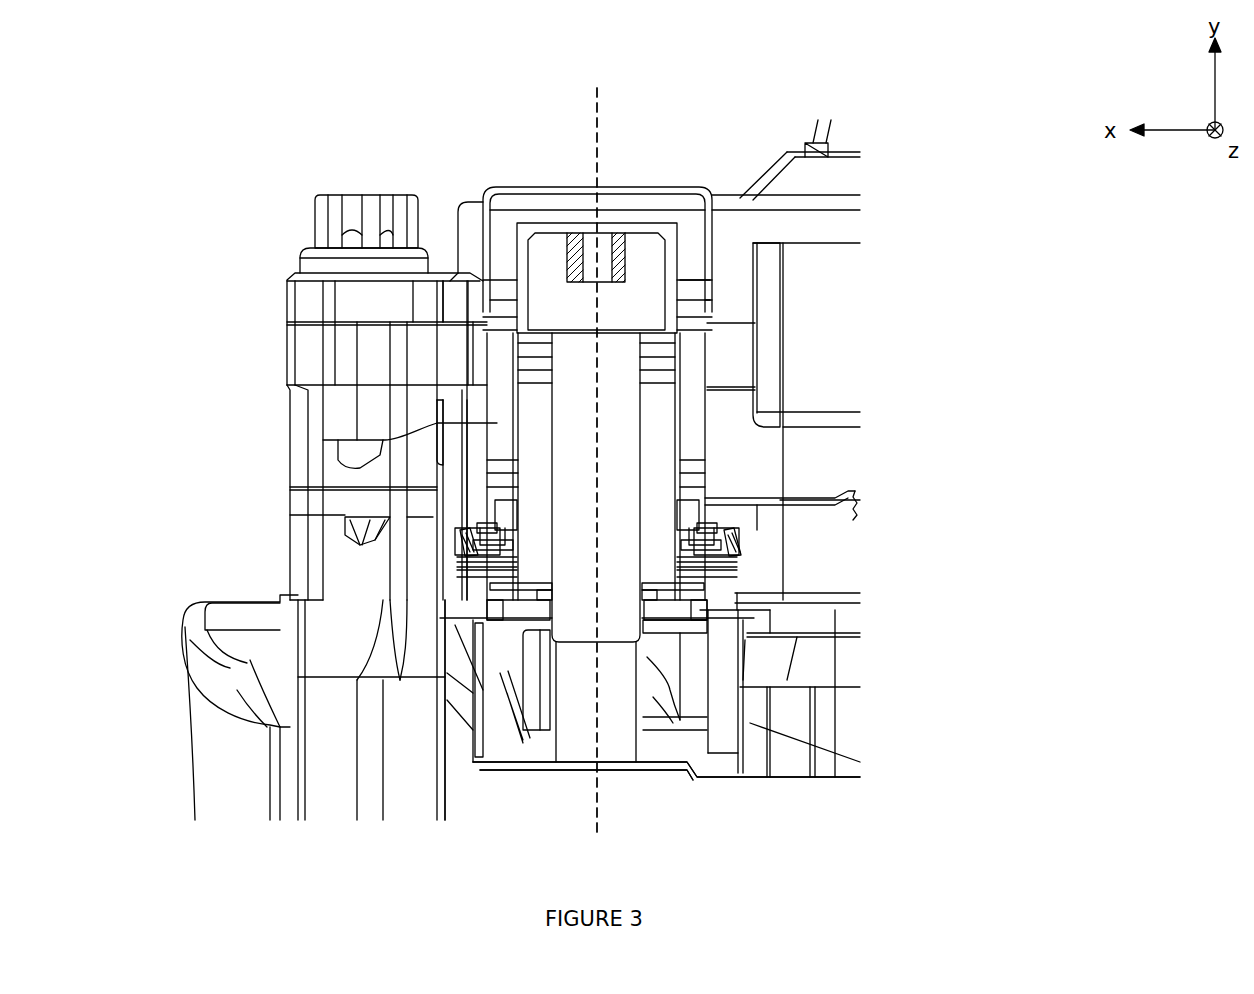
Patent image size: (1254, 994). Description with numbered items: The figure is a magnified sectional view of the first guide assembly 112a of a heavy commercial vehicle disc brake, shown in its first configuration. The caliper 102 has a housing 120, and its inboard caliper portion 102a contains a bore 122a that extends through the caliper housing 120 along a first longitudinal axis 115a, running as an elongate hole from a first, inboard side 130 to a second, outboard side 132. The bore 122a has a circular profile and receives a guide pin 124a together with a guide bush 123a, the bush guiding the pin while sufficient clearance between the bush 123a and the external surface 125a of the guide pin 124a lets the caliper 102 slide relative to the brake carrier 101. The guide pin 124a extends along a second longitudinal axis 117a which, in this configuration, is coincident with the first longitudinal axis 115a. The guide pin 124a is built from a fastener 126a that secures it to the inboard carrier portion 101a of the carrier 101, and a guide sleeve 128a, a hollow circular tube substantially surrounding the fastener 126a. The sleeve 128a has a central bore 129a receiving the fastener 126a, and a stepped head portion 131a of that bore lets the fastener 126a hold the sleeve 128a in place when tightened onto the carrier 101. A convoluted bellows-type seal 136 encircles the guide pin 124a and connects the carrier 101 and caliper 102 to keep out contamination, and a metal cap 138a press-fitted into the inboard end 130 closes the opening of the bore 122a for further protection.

The brake carrier 101 is at (710, 782).
The inboard carrier portion 101a is at (710, 782).
The caliper 102 is at (278, 283).
The inboard caliper portion 102a is at (366, 140).
The first guide assembly 112a is at (494, 175).
The first longitudinal axis 115a is at (597, 92).
The second longitudinal axis 117a is at (597, 92).
The caliper housing 120 is at (723, 282).
The bore 122a is at (713, 428).
The guide bush 123a is at (520, 459).
The guide pin 124a is at (480, 510).
The external surface 125a is at (518, 405).
The fastener 126a is at (680, 370).
The guide sleeve 128a is at (663, 452).
The central bore 129a is at (640, 403).
The first (inboard) side 130 is at (702, 148).
The head portion 131a is at (520, 325).
The second (outboard) side 132 is at (755, 512).
The bellows-type seal 136 is at (460, 567).
The cap 138a is at (668, 187).